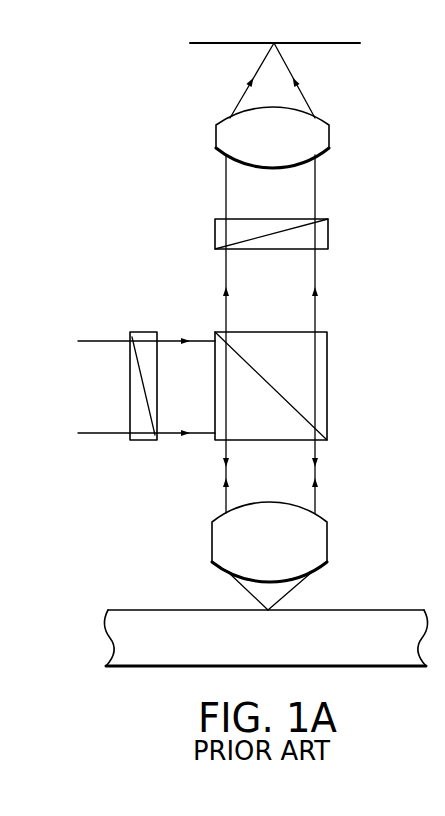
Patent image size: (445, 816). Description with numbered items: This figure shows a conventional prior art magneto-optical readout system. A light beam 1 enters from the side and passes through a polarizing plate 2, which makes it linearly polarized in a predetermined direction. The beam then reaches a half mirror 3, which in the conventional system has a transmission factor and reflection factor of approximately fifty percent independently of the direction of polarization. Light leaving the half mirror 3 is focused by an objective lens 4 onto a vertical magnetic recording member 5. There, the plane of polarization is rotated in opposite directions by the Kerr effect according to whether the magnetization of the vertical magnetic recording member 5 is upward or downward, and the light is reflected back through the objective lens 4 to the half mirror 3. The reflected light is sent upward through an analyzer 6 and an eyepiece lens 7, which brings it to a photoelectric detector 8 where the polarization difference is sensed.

The light beam 1 is at (102, 341).
The polarizing plate 2 is at (151, 332).
The half mirror 3 is at (327, 366).
The objective lens 4 is at (327, 538).
The vertical magnetic recording member 5 is at (398, 610).
The analyzer 6 is at (328, 235).
The eyepiece lens 7 is at (329, 137).
The photoelectric detector 8 is at (335, 44).